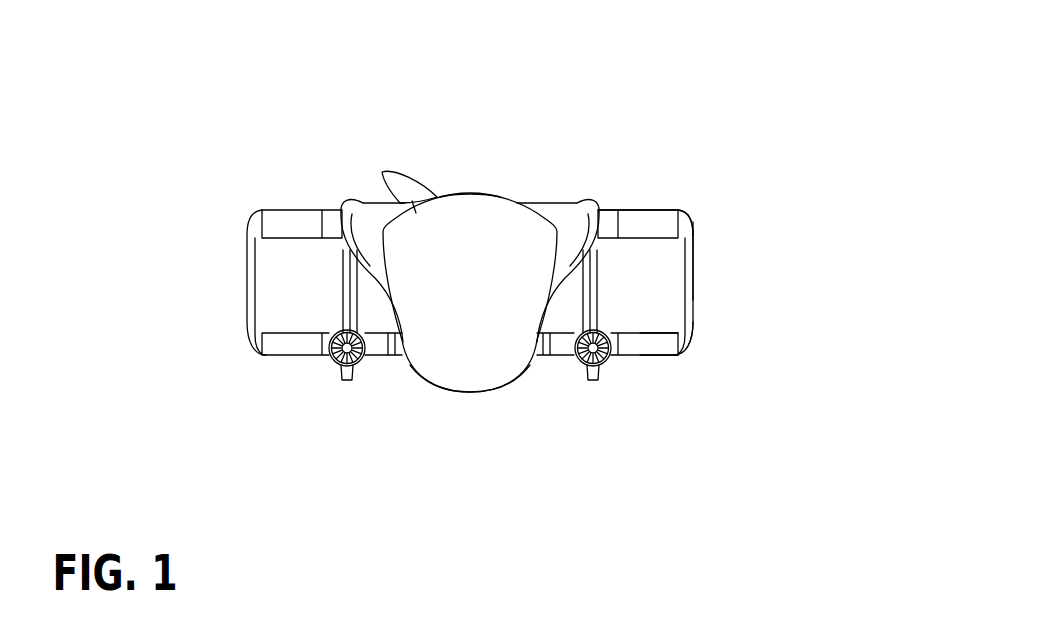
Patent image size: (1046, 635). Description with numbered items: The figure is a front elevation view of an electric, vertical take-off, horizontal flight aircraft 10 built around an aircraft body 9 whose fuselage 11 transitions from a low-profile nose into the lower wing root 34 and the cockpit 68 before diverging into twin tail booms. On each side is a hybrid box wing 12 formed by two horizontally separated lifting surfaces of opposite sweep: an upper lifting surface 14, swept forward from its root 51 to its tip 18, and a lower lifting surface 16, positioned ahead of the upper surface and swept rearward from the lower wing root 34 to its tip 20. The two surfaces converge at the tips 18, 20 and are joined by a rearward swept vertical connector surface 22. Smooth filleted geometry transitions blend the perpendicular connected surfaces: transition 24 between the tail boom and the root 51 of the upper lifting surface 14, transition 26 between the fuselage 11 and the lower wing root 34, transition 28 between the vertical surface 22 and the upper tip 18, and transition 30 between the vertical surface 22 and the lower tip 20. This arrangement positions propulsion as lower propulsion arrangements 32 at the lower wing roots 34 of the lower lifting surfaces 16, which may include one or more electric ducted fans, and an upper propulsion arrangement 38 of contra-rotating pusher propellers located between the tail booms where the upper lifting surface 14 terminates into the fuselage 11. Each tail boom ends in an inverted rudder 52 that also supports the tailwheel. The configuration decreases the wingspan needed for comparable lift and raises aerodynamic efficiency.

The aircraft 10 is at (599, 97).
The aircraft body 9 is at (455, 189).
The fuselage 11 is at (515, 203).
The hybrid box wing 12 is at (265, 208).
The upper lifting surface 14 is at (300, 215).
The lower lifting surface 16 is at (292, 347).
The wing tip of upper lifting surface 18 is at (684, 204).
The wing tip of lower lifting surface 20 is at (655, 343).
The vertical connector surface 22 is at (696, 258).
The filleted geometry transition 24 is at (608, 210).
The filleted geometry transition 26 is at (540, 370).
The filleted geometry transition 28 is at (690, 223).
The filleted geometry transition 30 is at (692, 340).
The lower propulsion arrangement 32 is at (361, 370).
The lower wing root 34 is at (330, 333).
The upper propulsion arrangement 38 is at (416, 180).
The root of upper lifting surface 51 is at (625, 210).
The inverted rudder 52 is at (347, 282).
The cockpit 68 is at (485, 193).